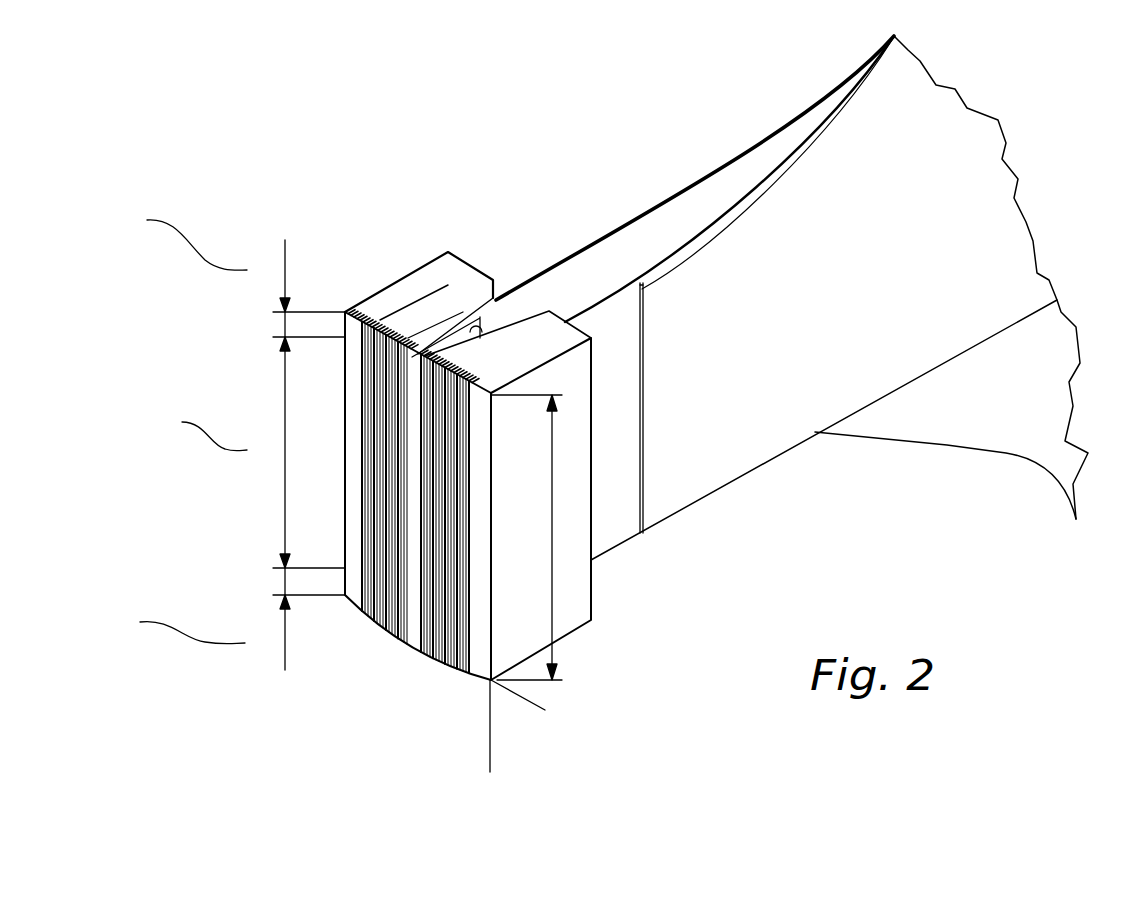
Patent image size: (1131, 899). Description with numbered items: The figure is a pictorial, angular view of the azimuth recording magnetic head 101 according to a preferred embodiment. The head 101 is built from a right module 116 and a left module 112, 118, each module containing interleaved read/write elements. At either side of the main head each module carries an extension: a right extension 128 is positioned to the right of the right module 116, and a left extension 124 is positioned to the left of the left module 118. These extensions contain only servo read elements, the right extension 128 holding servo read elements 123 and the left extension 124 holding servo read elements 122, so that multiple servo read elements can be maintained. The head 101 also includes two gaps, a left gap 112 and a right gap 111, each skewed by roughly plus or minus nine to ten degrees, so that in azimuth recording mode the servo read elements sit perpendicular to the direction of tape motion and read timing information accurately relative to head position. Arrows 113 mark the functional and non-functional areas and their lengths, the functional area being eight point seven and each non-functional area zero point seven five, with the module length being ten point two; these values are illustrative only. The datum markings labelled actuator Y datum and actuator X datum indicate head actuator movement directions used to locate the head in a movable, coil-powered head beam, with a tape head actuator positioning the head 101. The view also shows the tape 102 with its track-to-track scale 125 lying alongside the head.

The azimuth recording magnetic head 101 is at (558, 104).
The magnetic tape 102 is at (747, 449).
The right gap 111 is at (440, 463).
The left module 112 is at (380, 436).
The arrows 113 is at (285, 267).
The right module 116 is at (478, 320).
The left module 118 is at (470, 316).
The servo read elements 122 is at (378, 314).
The servo read elements 123 is at (475, 372).
The left extension 124 is at (446, 251).
The tape track position scale 125 is at (897, 284).
The right extension 128 is at (580, 332).